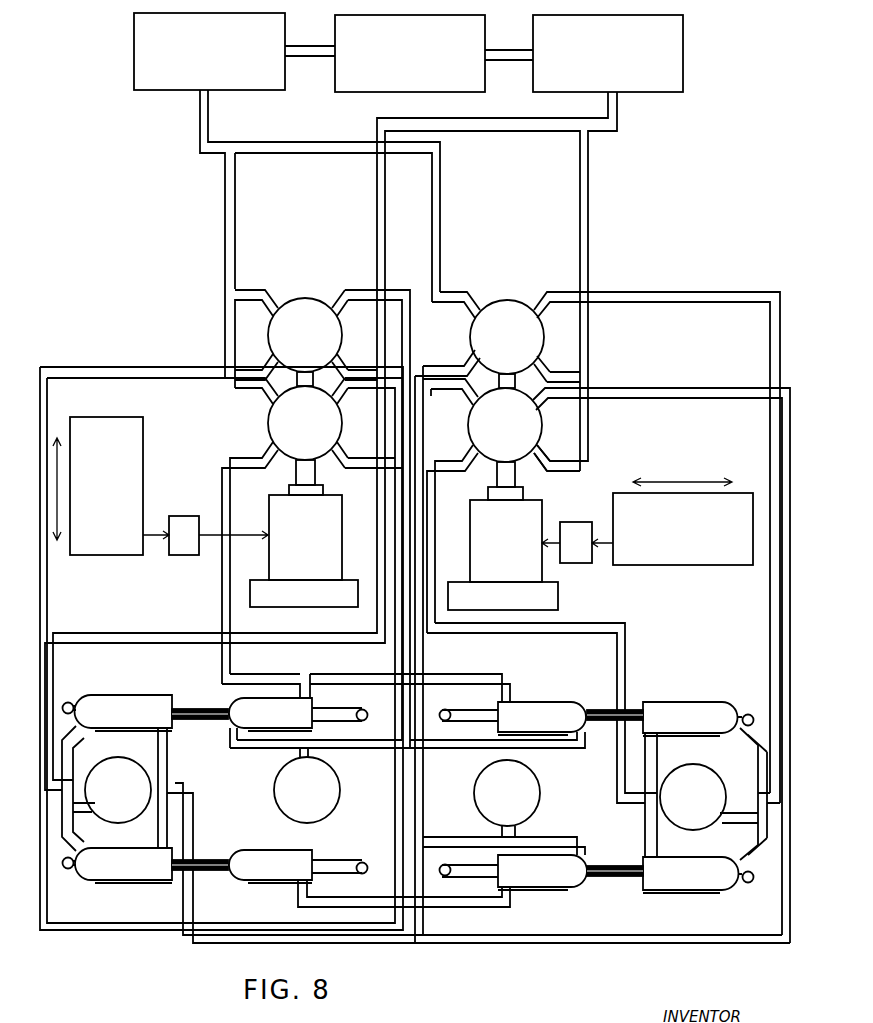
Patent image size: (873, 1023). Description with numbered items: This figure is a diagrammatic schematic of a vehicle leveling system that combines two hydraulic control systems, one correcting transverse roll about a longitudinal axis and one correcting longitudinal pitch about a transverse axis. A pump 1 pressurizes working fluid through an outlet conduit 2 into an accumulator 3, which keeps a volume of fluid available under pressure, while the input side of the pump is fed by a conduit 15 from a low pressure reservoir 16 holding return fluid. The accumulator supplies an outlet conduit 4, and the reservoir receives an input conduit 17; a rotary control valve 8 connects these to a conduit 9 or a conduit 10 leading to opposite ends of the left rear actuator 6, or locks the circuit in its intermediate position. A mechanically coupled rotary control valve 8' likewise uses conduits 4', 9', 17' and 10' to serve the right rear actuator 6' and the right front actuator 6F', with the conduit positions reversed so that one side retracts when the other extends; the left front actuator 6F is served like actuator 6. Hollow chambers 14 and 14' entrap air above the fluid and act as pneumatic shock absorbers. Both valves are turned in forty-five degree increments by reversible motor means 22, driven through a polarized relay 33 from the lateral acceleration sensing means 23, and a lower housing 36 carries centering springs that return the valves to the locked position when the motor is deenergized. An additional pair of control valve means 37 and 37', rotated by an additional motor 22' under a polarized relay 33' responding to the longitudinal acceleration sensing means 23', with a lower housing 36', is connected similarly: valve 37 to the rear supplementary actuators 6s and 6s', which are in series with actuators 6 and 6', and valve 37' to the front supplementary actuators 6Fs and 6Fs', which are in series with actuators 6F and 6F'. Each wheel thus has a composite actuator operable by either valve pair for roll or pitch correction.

The pump 1 is at (468, 44).
The outlet conduit 2 is at (331, 57).
The accumulator 3 is at (142, 32).
The outlet conduit 4 is at (294, 239).
The conduit 4' is at (162, 391).
The left rear actuator 6 is at (514, 889).
The right rear actuator 6' is at (513, 694).
The left front actuator 6F is at (298, 884).
The right front actuator 6F' is at (298, 692).
The left front supplementary actuator 6Fs is at (146, 884).
The right front supplementary actuator 6Fs' is at (146, 692).
The rear supplementary actuator 6s is at (670, 890).
The rear supplementary actuator 6s' is at (670, 695).
The rotary control valve 8 is at (305, 319).
The rotary control valve 8' is at (271, 423).
The conduit 9 is at (277, 335).
The conduit 9' is at (340, 572).
The conduit 10 is at (407, 500).
The conduit 10' is at (221, 648).
The hollow chamber 14 is at (528, 798).
The hollow chamber 14' is at (327, 785).
The conduit 15 is at (525, 60).
The reservoir 16 is at (690, 36).
The input conduit 17 is at (364, 441).
The conduit 17' is at (367, 472).
The reversible electrical motor means 22 is at (326, 520).
The control valve operating motor 22' is at (494, 522).
The lateral acceleration sensing means 23 is at (111, 505).
The longitudinal acceleration sensing means 23' is at (672, 538).
The polarized relay 33 is at (218, 554).
The polarized relay 33' is at (578, 559).
The lower housing 36 is at (316, 583).
The lower housing 36' is at (500, 586).
The control valve means 37 is at (597, 528).
The control valve means 37' is at (606, 661).